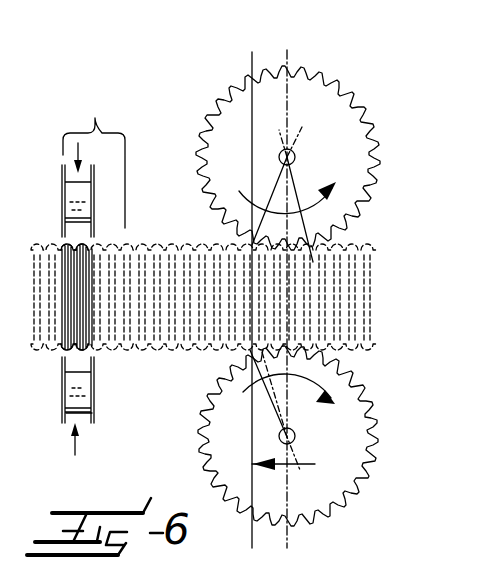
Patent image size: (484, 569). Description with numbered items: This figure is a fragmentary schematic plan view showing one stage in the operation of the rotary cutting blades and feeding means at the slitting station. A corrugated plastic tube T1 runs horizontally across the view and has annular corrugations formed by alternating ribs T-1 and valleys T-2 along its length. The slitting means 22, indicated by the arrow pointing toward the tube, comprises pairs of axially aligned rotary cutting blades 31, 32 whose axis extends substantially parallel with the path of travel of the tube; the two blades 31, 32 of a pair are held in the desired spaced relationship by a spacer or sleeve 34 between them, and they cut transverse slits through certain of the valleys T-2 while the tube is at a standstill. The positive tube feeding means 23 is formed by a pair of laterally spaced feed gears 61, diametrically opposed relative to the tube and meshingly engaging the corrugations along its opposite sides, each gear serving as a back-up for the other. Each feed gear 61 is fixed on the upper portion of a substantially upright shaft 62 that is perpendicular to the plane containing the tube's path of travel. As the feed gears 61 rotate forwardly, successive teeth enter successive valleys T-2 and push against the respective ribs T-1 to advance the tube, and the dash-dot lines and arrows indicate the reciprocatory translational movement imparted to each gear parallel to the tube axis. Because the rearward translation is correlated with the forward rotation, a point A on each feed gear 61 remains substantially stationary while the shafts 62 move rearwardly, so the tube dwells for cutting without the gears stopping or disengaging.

The slitting means 22 is at (124, 76).
The positive tube feeding means 23 is at (343, 78).
The feed gear 61 is at (338, 110).
The upright shaft 62 is at (296, 157).
The tube T1 is at (378, 278).
The valley T-2 is at (172, 246).
The rib T-1 is at (158, 350).
The point on feed gear A is at (243, 214).
The rotary cutting blade 31 is at (93, 421).
The rotary cutting blade 32 is at (62, 423).
The spacer or sleeve 34 is at (84, 428).